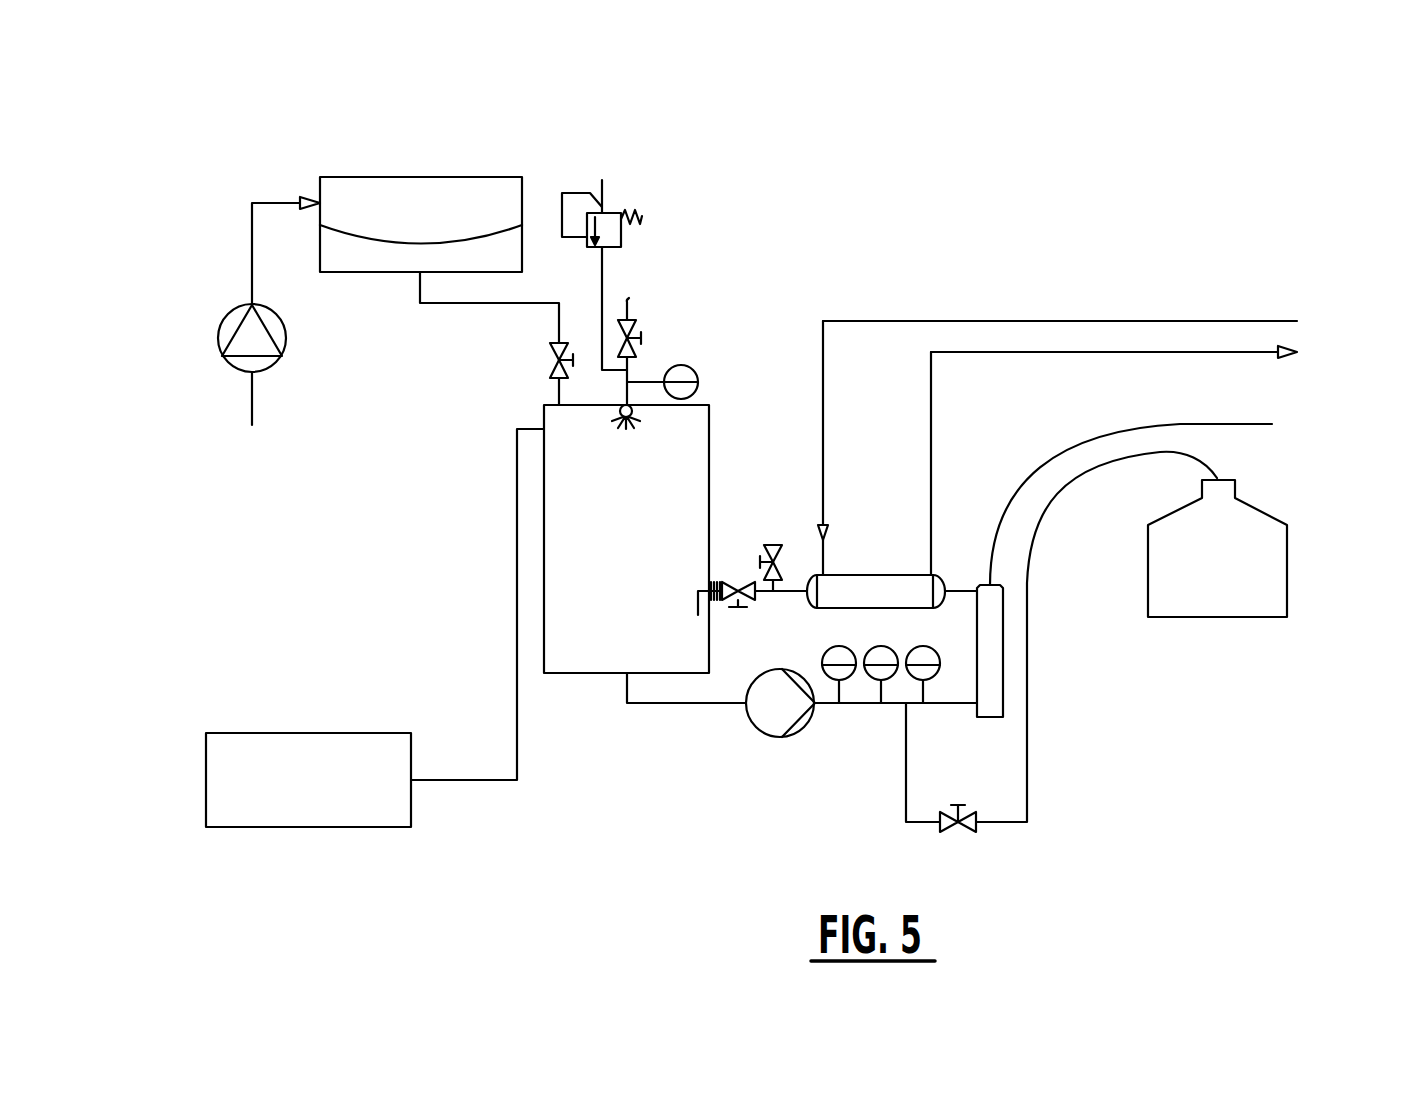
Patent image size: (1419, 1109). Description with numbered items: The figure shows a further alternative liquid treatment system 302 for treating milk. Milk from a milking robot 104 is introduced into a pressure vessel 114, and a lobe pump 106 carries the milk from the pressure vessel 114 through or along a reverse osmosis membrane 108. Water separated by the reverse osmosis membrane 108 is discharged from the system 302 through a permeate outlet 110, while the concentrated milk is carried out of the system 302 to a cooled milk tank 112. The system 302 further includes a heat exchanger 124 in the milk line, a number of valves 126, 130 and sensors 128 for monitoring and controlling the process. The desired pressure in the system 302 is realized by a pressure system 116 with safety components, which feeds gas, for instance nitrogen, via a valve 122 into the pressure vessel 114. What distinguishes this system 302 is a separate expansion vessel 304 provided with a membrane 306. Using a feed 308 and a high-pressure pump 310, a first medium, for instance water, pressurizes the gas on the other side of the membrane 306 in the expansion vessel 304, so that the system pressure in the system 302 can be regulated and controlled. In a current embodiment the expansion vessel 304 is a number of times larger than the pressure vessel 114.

The alternative liquid treatment system 302 is at (957, 160).
The expansion vessel 304 is at (455, 177).
The membrane 306 is at (380, 240).
The feed 308 is at (282, 203).
The high-pressure pump 310 is at (220, 352).
The pressure system 116 is at (677, 150).
The valve 122 is at (553, 377).
The pressure vessel 114 is at (580, 660).
The milking robot 104 is at (247, 750).
The lobe pump 106 is at (757, 720).
The sensors 128 is at (770, 651).
The valve 126 is at (768, 495).
The heat exchanger 124 is at (855, 582).
The permeate outlet 110 is at (1250, 423).
The reverse osmosis membrane 108 is at (990, 708).
The cooled milk tank 112 is at (1273, 585).
The valve 130 is at (968, 826).